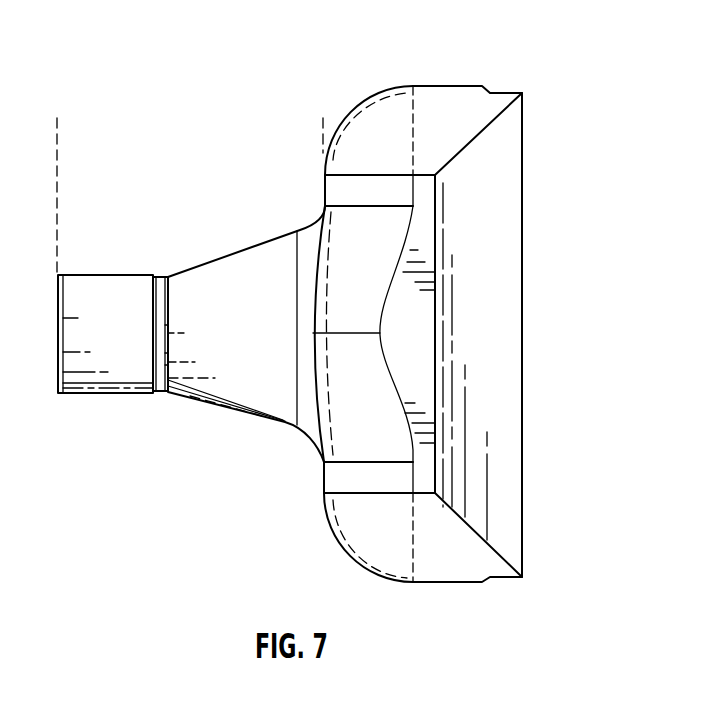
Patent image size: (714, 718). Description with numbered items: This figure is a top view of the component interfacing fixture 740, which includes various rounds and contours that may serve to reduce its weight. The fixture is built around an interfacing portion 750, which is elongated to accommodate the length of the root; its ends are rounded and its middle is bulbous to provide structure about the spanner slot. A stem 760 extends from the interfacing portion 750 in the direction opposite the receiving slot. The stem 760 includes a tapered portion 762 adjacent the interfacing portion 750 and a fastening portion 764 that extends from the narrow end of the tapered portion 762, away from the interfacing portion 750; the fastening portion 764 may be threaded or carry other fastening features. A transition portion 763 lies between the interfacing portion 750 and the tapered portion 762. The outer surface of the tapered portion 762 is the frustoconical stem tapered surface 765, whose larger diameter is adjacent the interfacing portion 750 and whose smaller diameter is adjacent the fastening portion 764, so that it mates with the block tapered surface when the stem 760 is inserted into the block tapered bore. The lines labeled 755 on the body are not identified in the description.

The component interfacing fixture 740 is at (552, 48).
The interfacing portion 750 is at (493, 365).
The mounting flange 755 is at (355, 440).
The stem 760 is at (323, 118).
The tapered portion 762 is at (222, 382).
The transition portion 763 is at (162, 275).
The fastening portion 764 is at (93, 378).
The stem tapered surface 765 is at (248, 248).